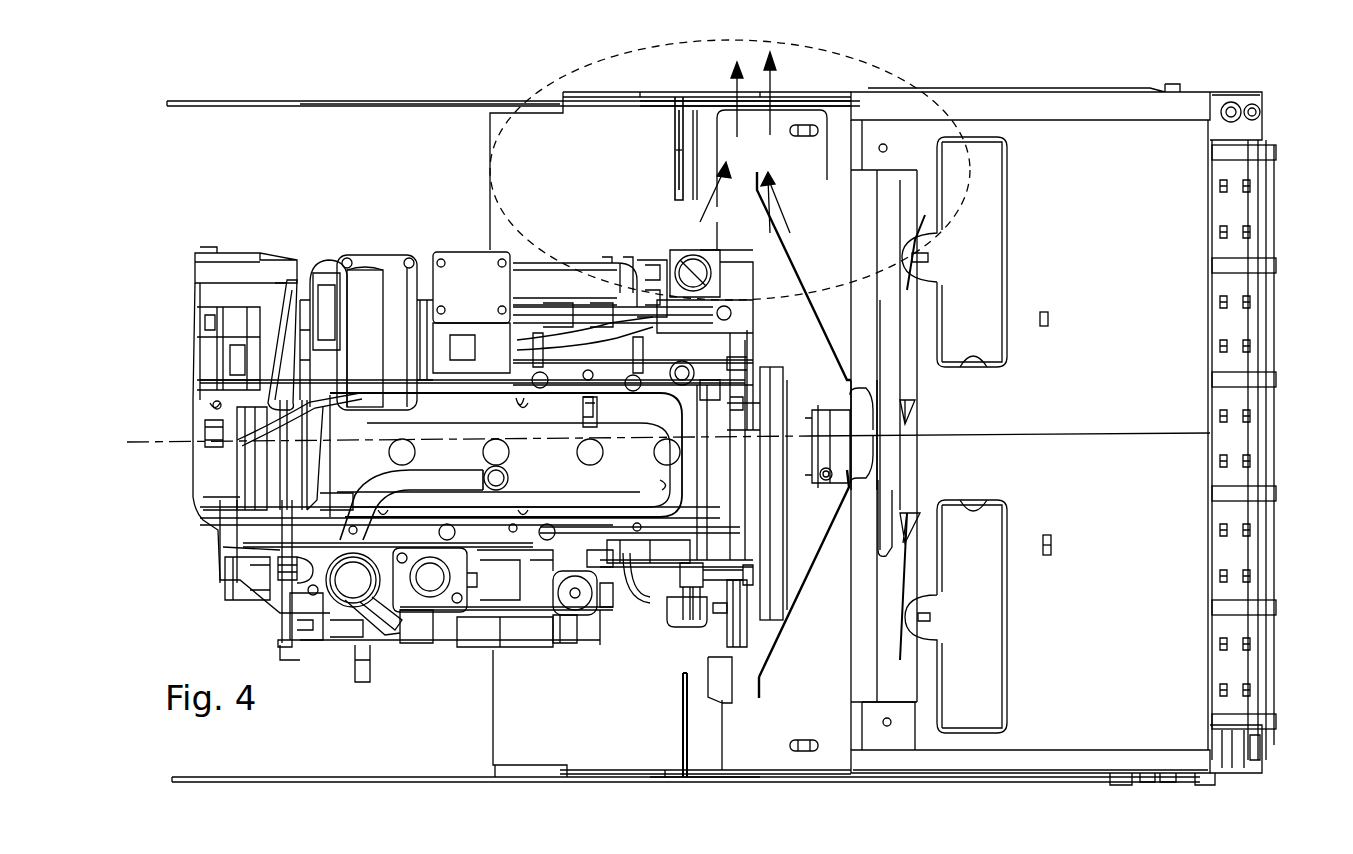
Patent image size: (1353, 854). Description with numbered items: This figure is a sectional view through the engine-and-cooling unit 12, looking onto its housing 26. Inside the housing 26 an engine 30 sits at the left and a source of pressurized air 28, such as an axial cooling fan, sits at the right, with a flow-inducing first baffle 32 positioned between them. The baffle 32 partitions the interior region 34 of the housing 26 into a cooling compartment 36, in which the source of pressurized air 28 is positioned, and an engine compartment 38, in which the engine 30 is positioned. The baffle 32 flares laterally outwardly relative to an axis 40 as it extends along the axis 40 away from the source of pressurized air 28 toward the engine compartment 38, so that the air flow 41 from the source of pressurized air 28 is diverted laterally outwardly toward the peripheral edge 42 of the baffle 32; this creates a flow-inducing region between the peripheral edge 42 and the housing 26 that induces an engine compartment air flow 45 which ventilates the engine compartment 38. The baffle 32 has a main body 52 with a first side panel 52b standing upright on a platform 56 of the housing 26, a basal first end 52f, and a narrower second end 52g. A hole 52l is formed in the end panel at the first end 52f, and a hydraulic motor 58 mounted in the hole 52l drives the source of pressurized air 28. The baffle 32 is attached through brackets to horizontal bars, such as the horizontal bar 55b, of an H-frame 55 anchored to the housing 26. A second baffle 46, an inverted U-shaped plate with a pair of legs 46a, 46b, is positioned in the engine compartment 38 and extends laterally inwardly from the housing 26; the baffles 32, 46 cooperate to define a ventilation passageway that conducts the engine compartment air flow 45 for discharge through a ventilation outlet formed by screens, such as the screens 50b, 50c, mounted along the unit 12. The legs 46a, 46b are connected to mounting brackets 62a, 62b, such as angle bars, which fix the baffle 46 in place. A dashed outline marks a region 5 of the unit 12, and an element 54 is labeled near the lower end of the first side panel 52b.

The detail region circle 5 is at (563, 78).
The engine-and-cooling unit 12 is at (1262, 80).
The housing 26 is at (301, 101).
The source of pressurized air 28 is at (913, 585).
The engine 30 is at (370, 275).
The first baffle 32 is at (808, 317).
The interior region 34 is at (377, 107).
The cooling compartment 36 is at (849, 750).
The engine compartment 38 is at (529, 748).
The axis 40 is at (143, 447).
The air flow 41 is at (791, 212).
The peripheral edge 42 is at (752, 183).
The engine compartment air flow 45 is at (694, 217).
The second baffle 46 is at (674, 191).
The leg 46a is at (682, 690).
The leg 46b is at (677, 170).
The screen 50b is at (657, 778).
The screen 50c is at (650, 138).
The main body 52 is at (792, 252).
The first side panel 52b is at (815, 298).
The first end 52f is at (858, 488).
The second end 52g is at (718, 228).
The hole 52l is at (862, 412).
The baffle lower end 54 is at (762, 694).
The H-frame 55 is at (870, 543).
The horizontal bar 55b is at (870, 673).
The platform 56 is at (750, 750).
The hydraulic motor 58 is at (845, 482).
The mounting bracket 62a is at (662, 773).
The mounting bracket 62b is at (653, 112).